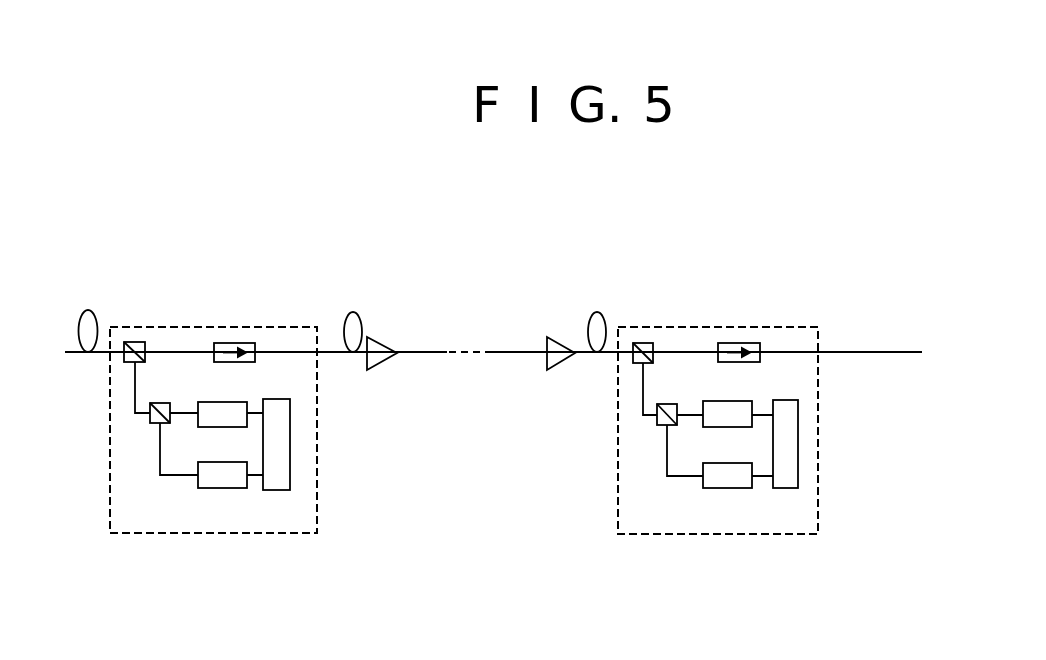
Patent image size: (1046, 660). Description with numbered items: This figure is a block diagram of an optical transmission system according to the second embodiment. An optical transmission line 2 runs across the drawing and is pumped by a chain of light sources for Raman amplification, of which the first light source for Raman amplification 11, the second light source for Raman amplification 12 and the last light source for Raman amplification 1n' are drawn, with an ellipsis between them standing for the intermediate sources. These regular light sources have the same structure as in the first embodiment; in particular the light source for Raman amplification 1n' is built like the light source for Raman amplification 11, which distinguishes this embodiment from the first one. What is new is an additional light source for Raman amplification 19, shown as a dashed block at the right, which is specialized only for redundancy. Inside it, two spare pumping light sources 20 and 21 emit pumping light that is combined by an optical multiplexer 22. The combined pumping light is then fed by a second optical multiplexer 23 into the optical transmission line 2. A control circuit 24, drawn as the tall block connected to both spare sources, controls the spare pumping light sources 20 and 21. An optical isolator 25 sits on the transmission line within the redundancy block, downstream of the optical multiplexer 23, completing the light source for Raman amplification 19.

The optical transmission line 2 is at (90, 310).
The light source for Raman amplification 11 is at (250, 327).
The light source for Raman amplification 12 is at (378, 337).
The light source for Raman amplification 1n' is at (569, 309).
The light source for Raman amplification 19 is at (723, 327).
The spare pumping light source 20 is at (742, 401).
The spare pumping light source 21 is at (728, 488).
The optical multiplexer 22 is at (660, 426).
The optical multiplexer 23 is at (641, 343).
The control circuit 24 is at (798, 443).
The optical isolator 25 is at (748, 343).